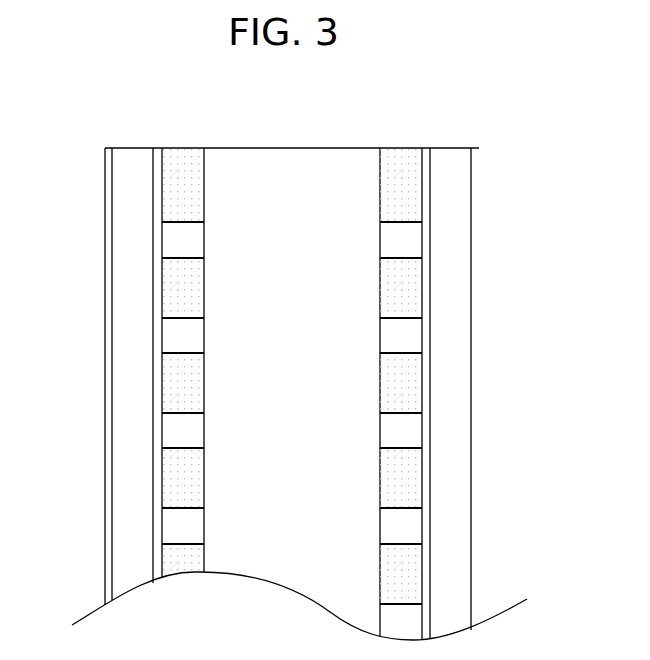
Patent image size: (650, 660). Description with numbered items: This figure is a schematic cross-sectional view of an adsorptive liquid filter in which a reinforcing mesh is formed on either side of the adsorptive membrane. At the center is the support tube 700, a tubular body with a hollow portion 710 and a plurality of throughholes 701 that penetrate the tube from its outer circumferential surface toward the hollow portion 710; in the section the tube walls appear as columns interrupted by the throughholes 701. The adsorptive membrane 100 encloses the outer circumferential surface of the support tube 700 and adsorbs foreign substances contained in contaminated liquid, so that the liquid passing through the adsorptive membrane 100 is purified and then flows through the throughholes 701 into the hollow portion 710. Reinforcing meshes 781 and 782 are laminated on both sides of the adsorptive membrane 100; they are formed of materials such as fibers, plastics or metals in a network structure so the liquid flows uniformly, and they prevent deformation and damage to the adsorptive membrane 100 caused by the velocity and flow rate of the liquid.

The adsorptive membrane 100 is at (127, 229).
The support tube 700 is at (400, 170).
The throughholes 701 is at (412, 244).
The hollow portion 710 is at (289, 172).
The reinforcing mesh 781 is at (155, 282).
The reinforcing mesh 782 is at (107, 181).